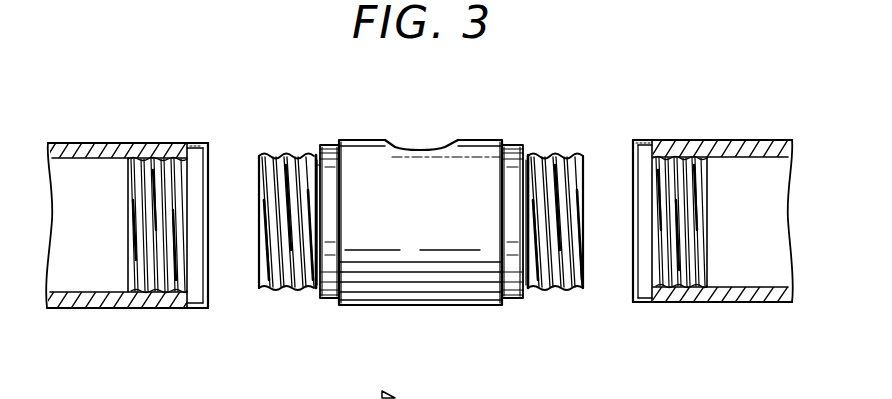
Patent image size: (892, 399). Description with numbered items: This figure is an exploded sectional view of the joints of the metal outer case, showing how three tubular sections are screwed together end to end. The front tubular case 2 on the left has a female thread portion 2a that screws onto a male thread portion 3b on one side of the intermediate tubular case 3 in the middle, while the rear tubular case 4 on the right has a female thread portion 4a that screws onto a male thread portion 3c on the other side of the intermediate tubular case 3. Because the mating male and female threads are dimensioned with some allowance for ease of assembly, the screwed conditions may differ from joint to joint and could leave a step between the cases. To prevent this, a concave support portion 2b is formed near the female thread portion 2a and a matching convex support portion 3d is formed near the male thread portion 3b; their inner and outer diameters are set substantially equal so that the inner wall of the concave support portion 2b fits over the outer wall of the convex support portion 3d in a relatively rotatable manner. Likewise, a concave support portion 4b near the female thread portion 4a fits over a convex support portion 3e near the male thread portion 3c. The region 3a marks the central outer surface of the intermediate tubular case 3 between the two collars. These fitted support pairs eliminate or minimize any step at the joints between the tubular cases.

The front tubular case 2 is at (89, 143).
The female thread portion 2a is at (143, 308).
The concave support portion 2b is at (198, 143).
The intermediate tubular case 3 is at (373, 152).
The recess in connector body 3a is at (431, 148).
The male thread portion 3b is at (286, 290).
The male thread portion 3c is at (547, 290).
The convex support portion 3d is at (328, 145).
The convex support portion 3e is at (512, 145).
The rear tubular case 4 is at (735, 140).
The female thread portion 4a is at (680, 302).
The concave support portion 4b is at (641, 143).